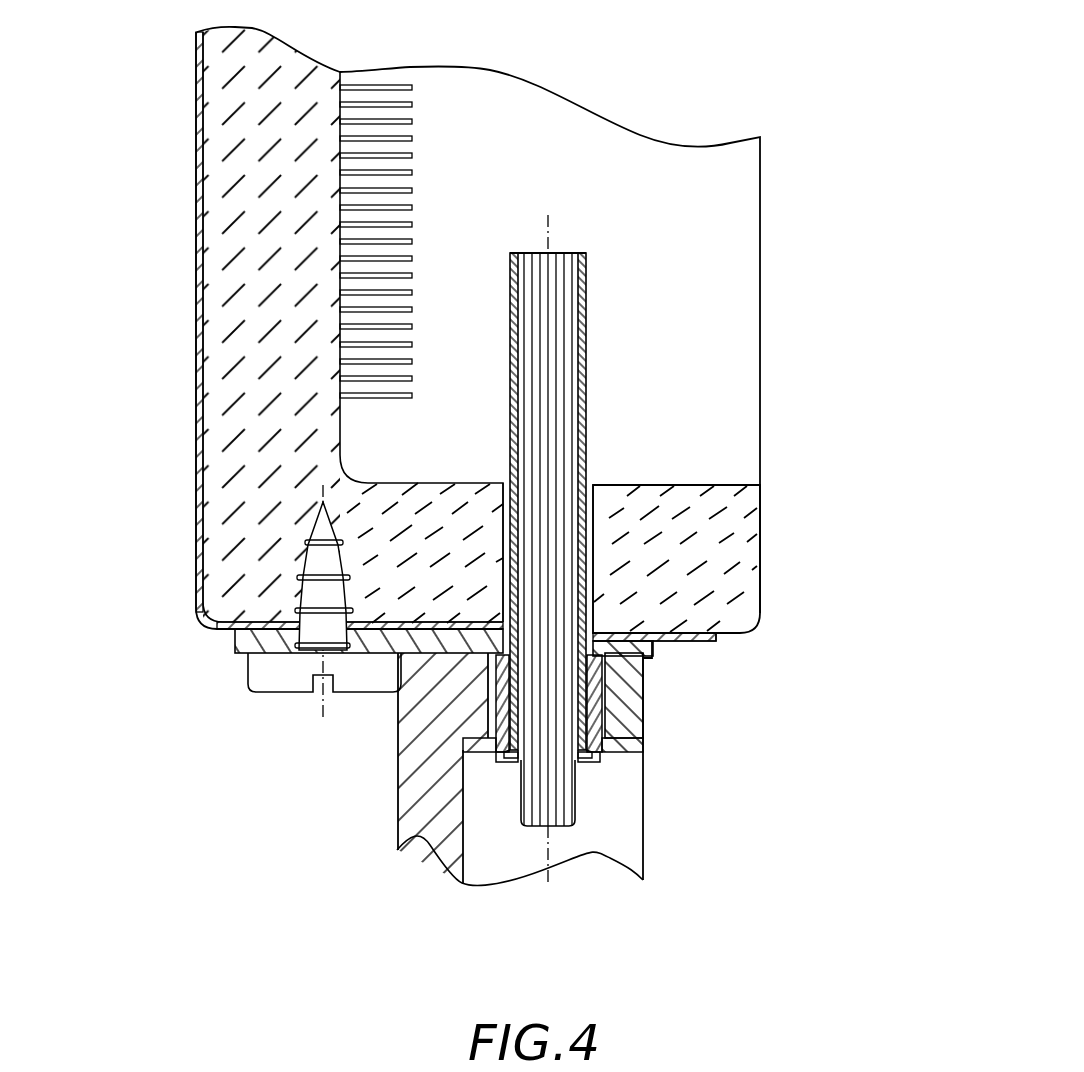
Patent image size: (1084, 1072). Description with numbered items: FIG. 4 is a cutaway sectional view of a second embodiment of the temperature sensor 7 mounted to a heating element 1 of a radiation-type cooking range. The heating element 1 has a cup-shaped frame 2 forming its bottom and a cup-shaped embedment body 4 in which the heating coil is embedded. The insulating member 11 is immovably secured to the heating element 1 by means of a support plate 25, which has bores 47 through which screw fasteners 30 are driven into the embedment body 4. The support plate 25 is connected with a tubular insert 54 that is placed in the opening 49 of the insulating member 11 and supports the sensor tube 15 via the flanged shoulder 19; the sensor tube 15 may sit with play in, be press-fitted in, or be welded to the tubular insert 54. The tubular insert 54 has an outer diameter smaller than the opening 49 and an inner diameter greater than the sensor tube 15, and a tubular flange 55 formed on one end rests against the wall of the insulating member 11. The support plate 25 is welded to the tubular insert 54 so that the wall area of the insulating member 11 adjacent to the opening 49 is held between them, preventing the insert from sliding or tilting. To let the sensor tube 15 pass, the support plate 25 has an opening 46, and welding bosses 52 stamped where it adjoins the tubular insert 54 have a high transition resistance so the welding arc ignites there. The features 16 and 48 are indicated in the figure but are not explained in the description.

The heating element 1 is at (652, 63).
The cup-shaped frame 2 is at (197, 87).
The embedment body 4 is at (726, 545).
The temperature sensor 7 is at (628, 333).
The insulating member 11 is at (398, 787).
The sensor tube 15 is at (590, 400).
The tube top end 16 is at (560, 253).
The flanged shoulder 19 is at (600, 772).
The support plate 25 is at (657, 648).
The screw fasteners 30 is at (282, 680).
The opening 46 is at (598, 620).
The bores 47 is at (268, 653).
The bore 48 is at (598, 485).
The opening 49 is at (647, 718).
The welding bosses 52 is at (603, 715).
The tubular insert 54 is at (640, 745).
The tubular flange 55 is at (627, 750).